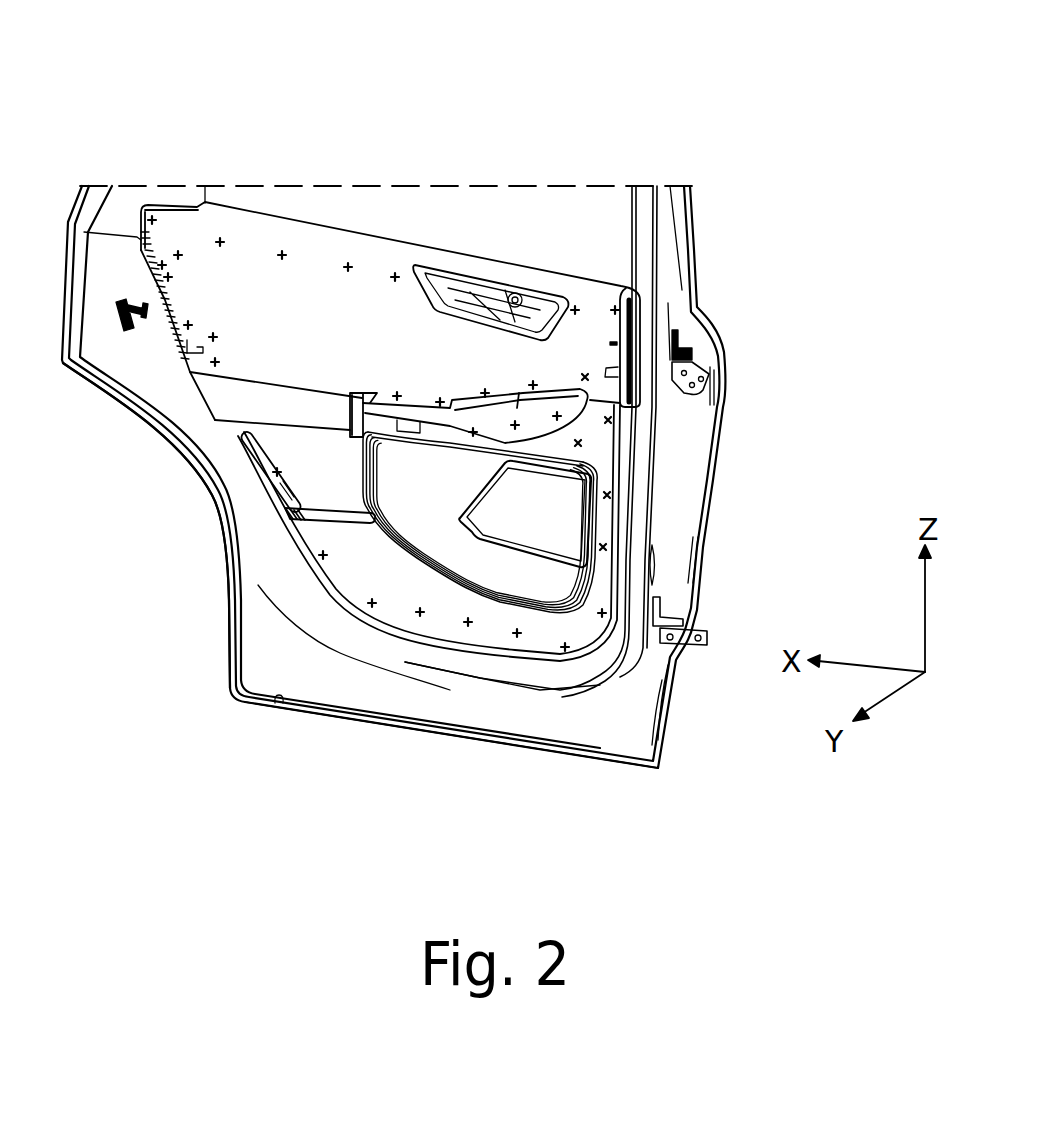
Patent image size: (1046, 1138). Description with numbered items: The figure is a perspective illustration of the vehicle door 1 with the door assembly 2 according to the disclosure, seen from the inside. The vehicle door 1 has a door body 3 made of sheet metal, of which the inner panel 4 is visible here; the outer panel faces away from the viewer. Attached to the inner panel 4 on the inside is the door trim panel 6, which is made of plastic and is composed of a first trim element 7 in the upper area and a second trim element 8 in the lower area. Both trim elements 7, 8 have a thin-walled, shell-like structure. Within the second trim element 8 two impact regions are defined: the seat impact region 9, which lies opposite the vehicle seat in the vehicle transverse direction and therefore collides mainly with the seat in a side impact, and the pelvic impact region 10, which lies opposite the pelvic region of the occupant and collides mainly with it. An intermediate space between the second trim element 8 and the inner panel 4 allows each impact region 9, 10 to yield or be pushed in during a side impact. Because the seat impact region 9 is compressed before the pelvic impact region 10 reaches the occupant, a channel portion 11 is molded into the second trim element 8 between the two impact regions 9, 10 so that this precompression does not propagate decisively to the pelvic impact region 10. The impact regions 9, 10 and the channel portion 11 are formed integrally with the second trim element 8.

The vehicle door 1 is at (528, 105).
The door assembly 2 is at (528, 105).
The door body 3 is at (232, 576).
The inner panel 4 is at (392, 690).
The door trim panel 6 is at (612, 437).
The first trim element 7 is at (298, 341).
The second trim element 8 is at (371, 581).
The seat impact region 9 is at (300, 537).
The pelvic impact region 10 is at (276, 486).
The channel portion 11 is at (236, 463).